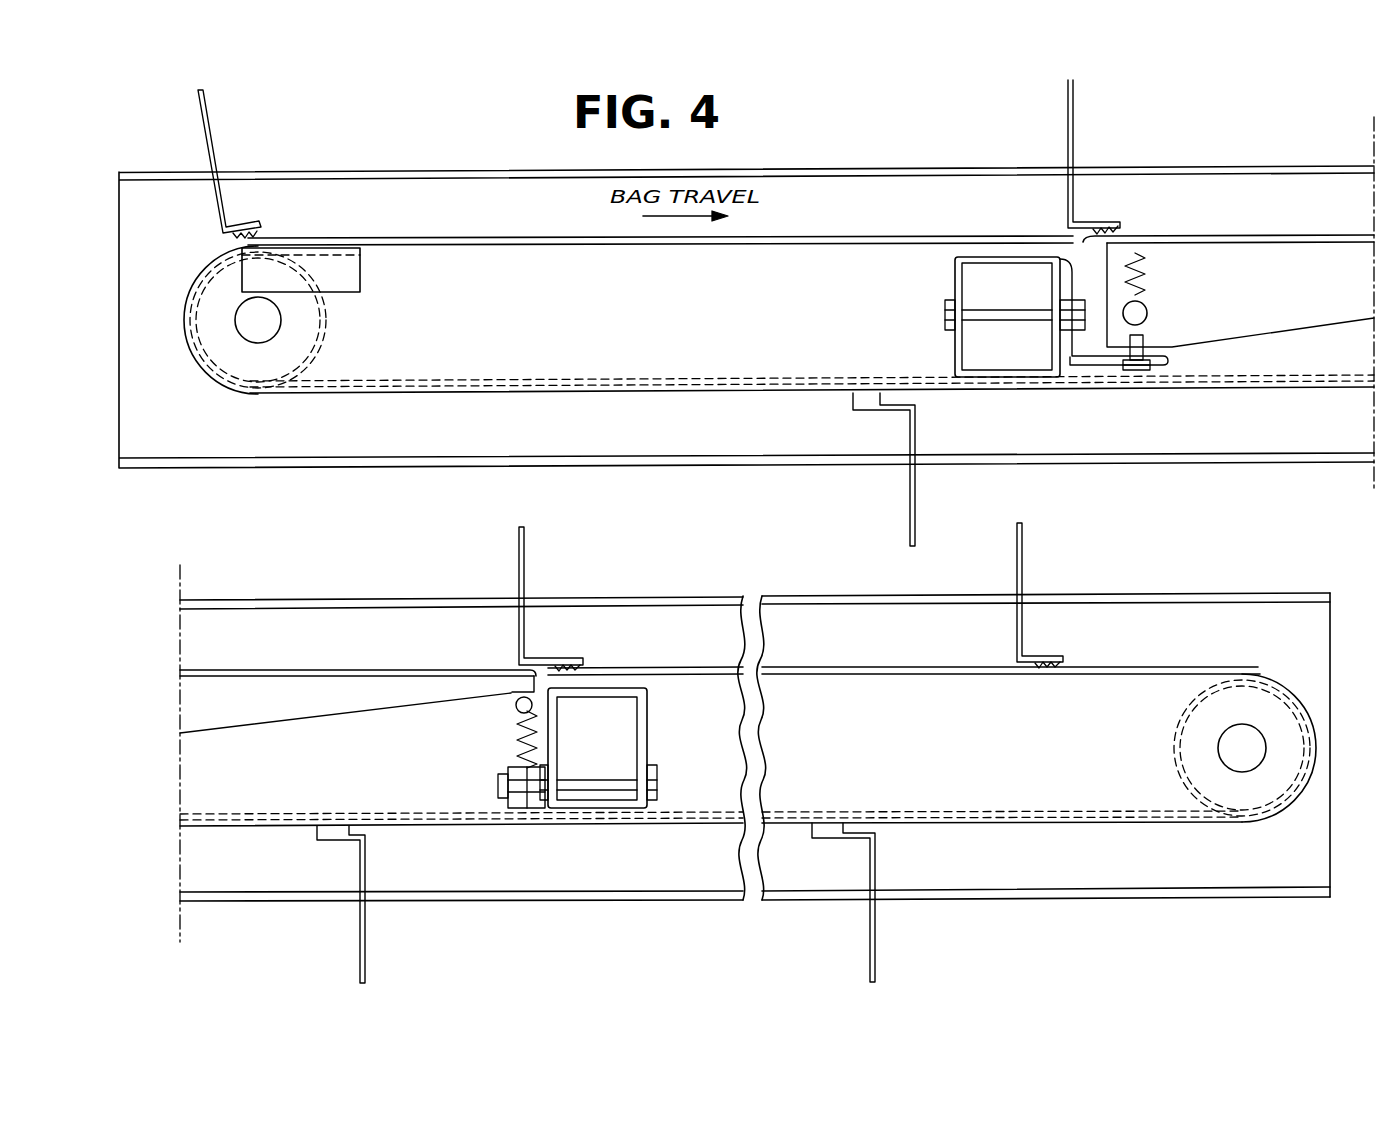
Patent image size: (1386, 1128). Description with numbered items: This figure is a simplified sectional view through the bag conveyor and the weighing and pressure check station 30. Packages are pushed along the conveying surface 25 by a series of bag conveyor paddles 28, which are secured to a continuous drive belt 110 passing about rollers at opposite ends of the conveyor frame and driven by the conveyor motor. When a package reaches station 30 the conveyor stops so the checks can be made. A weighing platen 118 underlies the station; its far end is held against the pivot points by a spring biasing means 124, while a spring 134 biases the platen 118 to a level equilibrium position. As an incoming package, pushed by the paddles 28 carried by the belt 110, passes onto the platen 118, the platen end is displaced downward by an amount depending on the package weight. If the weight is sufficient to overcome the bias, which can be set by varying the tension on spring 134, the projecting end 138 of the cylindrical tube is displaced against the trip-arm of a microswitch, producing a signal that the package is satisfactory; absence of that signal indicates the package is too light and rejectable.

The conveying surface 25 is at (422, 212).
The bag conveyor paddles 28 is at (213, 132).
The weight and seal check station 30 is at (259, 572).
The continuous drive belt 110 is at (520, 382).
The weighing platen 118 is at (1272, 262).
The spring biasing means 124 is at (515, 745).
The spring 134 is at (1152, 264).
The projecting end of tube 138 is at (1150, 318).